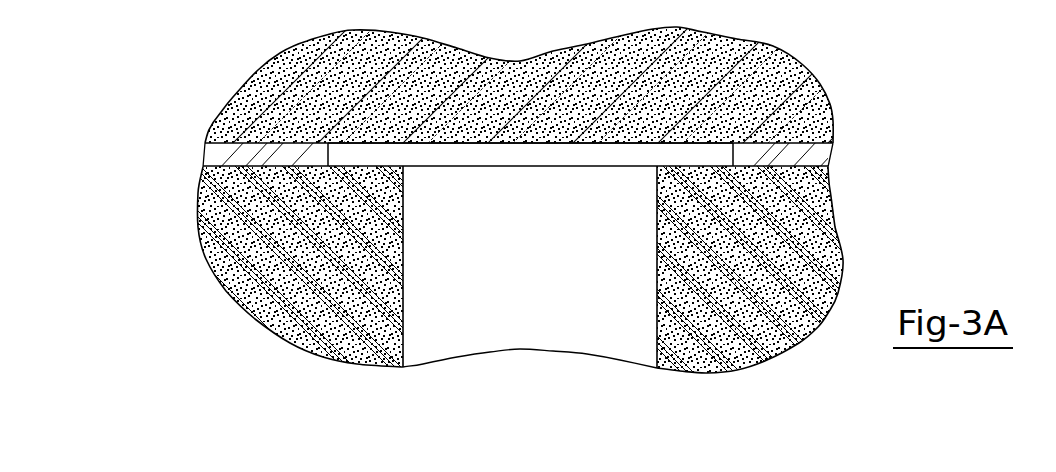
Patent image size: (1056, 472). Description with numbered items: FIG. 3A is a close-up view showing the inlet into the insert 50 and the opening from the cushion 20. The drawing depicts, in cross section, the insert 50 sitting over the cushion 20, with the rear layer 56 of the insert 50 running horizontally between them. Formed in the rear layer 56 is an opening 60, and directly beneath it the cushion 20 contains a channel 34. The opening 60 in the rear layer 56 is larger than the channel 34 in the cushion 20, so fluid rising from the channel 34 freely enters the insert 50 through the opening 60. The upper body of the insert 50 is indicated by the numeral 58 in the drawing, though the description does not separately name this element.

The insert 50 is at (223, 50).
The upper layer 58 is at (773, 102).
The rear layer 56 is at (227, 152).
The cushion 20 is at (260, 218).
The channel 34 is at (488, 330).
The opening 60 is at (660, 154).